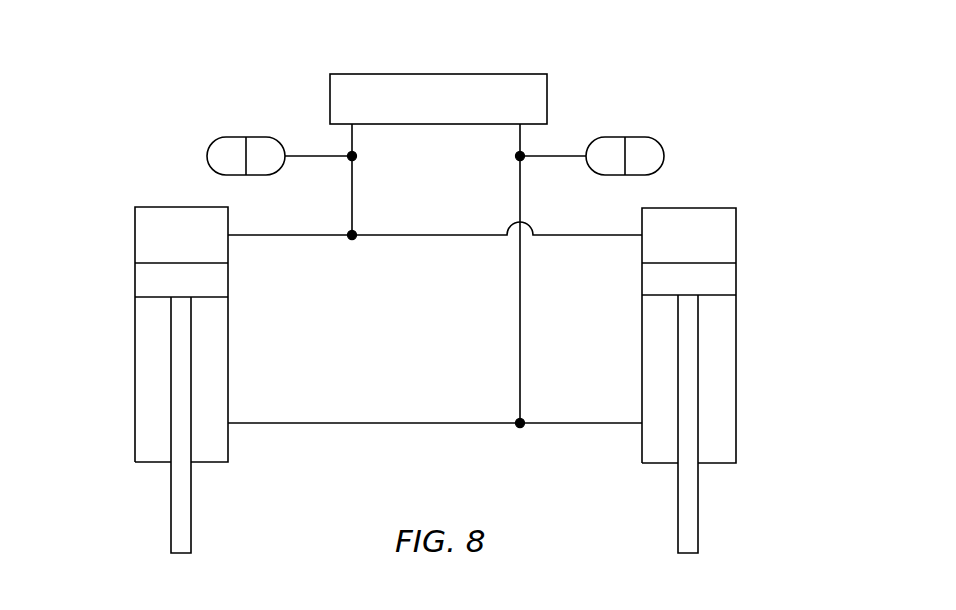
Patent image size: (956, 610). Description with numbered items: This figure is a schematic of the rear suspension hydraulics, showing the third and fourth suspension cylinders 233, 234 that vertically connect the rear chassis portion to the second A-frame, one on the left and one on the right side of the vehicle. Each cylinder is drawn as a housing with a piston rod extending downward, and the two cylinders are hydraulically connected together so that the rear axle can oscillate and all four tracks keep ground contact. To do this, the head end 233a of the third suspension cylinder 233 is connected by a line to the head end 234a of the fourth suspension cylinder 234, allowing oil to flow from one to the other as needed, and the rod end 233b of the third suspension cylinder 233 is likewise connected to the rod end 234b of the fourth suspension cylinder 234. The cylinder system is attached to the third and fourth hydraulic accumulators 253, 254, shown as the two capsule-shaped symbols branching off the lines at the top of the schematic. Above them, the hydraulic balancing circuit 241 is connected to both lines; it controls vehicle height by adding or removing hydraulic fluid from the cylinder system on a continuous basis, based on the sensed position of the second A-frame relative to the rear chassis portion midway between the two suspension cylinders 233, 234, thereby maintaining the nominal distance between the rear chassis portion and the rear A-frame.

The hydraulic balancing circuit 241 is at (453, 124).
The third hydraulic accumulator 253 is at (643, 137).
The fourth hydraulic accumulator 254 is at (228, 137).
The third suspension cylinder 233 is at (141, 380).
The head end of third suspension cylinder 233a is at (148, 229).
The rod end of third suspension cylinder 233b is at (152, 422).
The fourth suspension cylinder 234 is at (729, 368).
The head end of fourth suspension cylinder 234a is at (722, 230).
The rod end of fourth suspension cylinder 234b is at (722, 430).